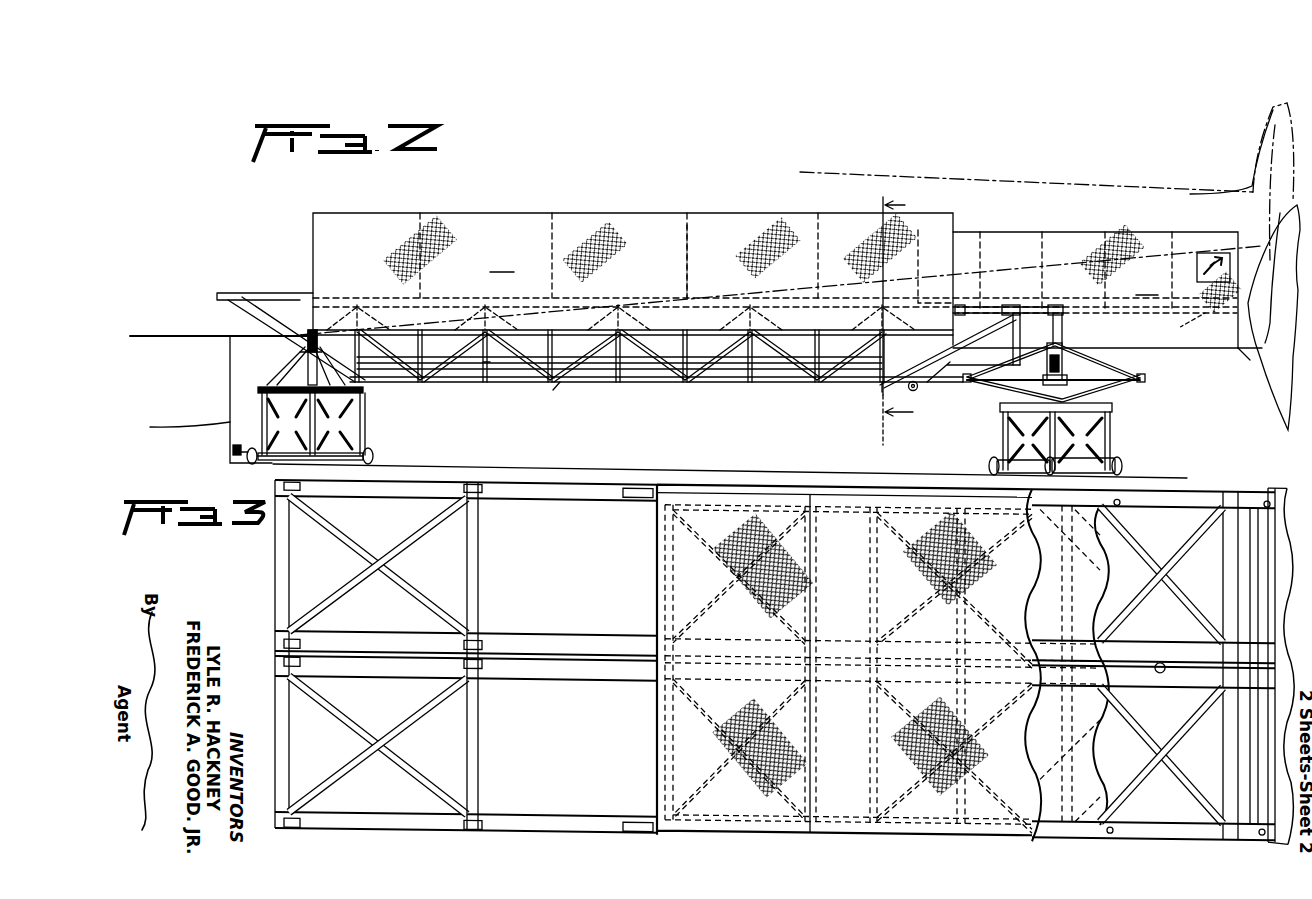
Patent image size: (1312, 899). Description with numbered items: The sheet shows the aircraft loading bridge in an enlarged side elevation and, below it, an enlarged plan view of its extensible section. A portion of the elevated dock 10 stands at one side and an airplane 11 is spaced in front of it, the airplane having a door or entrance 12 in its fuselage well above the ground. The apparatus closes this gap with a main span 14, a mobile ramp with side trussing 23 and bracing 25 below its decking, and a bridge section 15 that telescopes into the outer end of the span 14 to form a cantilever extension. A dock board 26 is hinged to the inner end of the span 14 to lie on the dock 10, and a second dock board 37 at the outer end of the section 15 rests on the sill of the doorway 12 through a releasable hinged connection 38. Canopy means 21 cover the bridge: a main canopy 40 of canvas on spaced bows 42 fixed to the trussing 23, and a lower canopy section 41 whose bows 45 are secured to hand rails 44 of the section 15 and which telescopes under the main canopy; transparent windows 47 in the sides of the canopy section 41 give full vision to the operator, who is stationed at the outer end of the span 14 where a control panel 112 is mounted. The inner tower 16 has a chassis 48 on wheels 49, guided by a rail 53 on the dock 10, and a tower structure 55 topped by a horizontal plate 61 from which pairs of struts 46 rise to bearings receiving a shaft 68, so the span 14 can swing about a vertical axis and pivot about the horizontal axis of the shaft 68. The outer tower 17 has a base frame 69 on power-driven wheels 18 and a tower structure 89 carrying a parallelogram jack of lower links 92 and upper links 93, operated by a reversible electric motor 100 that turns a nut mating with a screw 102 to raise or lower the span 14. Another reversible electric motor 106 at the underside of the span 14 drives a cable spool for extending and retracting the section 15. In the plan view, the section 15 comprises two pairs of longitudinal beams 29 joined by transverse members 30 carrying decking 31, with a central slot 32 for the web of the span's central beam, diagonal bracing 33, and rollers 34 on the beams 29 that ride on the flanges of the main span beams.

In FIG. 2, the elevated dock 10 is at (166, 334).
In FIG. 2, the airplane 11 is at (1192, 193).
In FIG. 2, the door or entrance 12 is at (1264, 348).
In FIG. 2, the main span 14 is at (791, 397).
In FIG. 2, the bridge section 15 is at (1188, 395).
In FIG. 3, the bridge section 15 is at (768, 832).
In FIG. 2, the tower 16 is at (283, 405).
In FIG. 2, the outer supporting tower 17 is at (1049, 439).
In FIG. 2, the wheels 18 is at (1120, 461).
In FIG. 2, the canopy means 21 is at (512, 212).
In FIG. 2, the side trussing 23 is at (558, 386).
In FIG. 2, the bracing 25 is at (486, 364).
In FIG. 2, the dock board 26 is at (250, 330).
In FIG. 3, the beams 29 is at (555, 634).
In FIG. 3, the transverse members 30 is at (478, 736).
In FIG. 3, the decking 31 is at (1105, 602).
In FIG. 3, the gap or slot 32 is at (1158, 665).
In FIG. 3, the diagonal bracing 33 is at (400, 728).
In FIG. 3, the rollers 34 is at (478, 636).
In FIG. 2, the dock board 37 is at (1252, 355).
In FIG. 3, the dock board 37 is at (1278, 480).
In FIG. 3, the hinged mounting or connection 38 is at (1268, 546).
In FIG. 2, the main canopy 40 is at (502, 262).
In FIG. 2, the canopy section 41 is at (1095, 290).
In FIG. 2, the bows 42 is at (687, 225).
In FIG. 2, the hand rails 44 is at (1180, 326).
In FIG. 2, the bows 45 is at (1167, 240).
In FIG. 2, the struts 46 is at (285, 355).
In FIG. 2, the transparent windows 47 is at (1216, 252).
In FIG. 2, the base frame or chassis 48 is at (365, 447).
In FIG. 2, the wheels 49 is at (374, 454).
In FIG. 2, the rail 53 is at (202, 427).
In FIG. 2, the tower structure 55 is at (365, 413).
In FIG. 2, the horizontal plate 61 is at (363, 396).
In FIG. 2, the shaft 68 is at (310, 340).
In FIG. 2, the base frame 69 is at (1005, 463).
In FIG. 2, the tower structure 89 is at (1112, 431).
In FIG. 2, the lower links 92 is at (1100, 397).
In FIG. 2, the upper links 93 is at (1088, 356).
In FIG. 2, the reversible electric motor 100 is at (1005, 384).
In FIG. 2, the screw 102 is at (1100, 378).
In FIG. 2, the reversible electric motor 106 is at (911, 390).
In FIG. 2, the control panel 112 is at (1009, 294).